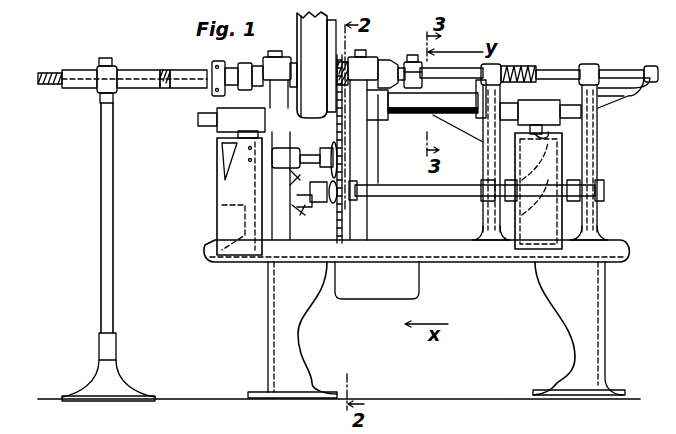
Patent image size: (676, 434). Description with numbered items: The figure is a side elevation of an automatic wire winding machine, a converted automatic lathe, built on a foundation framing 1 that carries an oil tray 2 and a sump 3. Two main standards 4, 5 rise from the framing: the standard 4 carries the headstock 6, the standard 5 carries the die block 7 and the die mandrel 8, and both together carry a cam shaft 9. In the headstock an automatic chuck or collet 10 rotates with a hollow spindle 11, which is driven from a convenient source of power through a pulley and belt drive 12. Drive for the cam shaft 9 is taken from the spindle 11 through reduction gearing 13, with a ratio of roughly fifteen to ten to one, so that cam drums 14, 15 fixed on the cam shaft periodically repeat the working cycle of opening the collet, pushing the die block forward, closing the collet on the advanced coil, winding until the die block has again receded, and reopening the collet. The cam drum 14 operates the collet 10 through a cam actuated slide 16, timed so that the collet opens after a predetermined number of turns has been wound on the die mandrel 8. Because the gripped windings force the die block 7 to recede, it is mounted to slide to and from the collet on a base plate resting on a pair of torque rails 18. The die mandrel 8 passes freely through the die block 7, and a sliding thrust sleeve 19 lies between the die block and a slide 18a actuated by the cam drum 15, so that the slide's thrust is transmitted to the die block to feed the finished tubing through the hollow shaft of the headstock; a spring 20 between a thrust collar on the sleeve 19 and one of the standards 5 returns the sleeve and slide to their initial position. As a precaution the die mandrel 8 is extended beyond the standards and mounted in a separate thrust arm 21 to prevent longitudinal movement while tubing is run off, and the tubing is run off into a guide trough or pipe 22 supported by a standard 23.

The foundation framing 1 is at (568, 295).
The oil tray 2 is at (405, 250).
The sump 3 is at (367, 290).
The main standard 4 is at (360, 219).
The main standard 5 is at (488, 218).
The headstock 6 is at (361, 62).
The die block 7 is at (410, 55).
The die mandrel 8 is at (610, 72).
The cam shaft 9 is at (428, 192).
The automatic chuck or collet 10 is at (387, 89).
The hollow spindle 11 is at (331, 60).
The pulley and belt drive 12 is at (313, 65).
The reduction gearing 13 is at (331, 223).
The cam drum 14 is at (217, 200).
The cam drum 15 is at (532, 239).
The cam actuated slide 16 is at (228, 125).
The torque rail 18 is at (413, 113).
The slide 18a is at (540, 119).
The sliding thrust sleeve 19 is at (463, 76).
The spring 20 is at (517, 70).
The thrust arm 21 is at (620, 108).
The guide trough or pipe 22 is at (175, 70).
The standard 23 is at (101, 247).